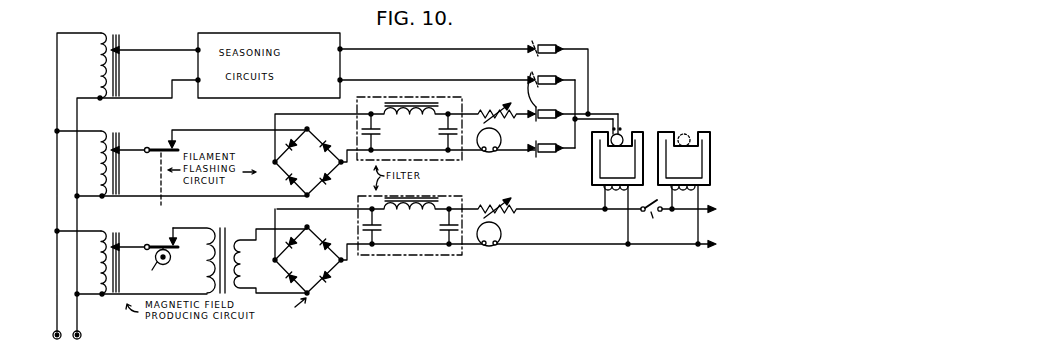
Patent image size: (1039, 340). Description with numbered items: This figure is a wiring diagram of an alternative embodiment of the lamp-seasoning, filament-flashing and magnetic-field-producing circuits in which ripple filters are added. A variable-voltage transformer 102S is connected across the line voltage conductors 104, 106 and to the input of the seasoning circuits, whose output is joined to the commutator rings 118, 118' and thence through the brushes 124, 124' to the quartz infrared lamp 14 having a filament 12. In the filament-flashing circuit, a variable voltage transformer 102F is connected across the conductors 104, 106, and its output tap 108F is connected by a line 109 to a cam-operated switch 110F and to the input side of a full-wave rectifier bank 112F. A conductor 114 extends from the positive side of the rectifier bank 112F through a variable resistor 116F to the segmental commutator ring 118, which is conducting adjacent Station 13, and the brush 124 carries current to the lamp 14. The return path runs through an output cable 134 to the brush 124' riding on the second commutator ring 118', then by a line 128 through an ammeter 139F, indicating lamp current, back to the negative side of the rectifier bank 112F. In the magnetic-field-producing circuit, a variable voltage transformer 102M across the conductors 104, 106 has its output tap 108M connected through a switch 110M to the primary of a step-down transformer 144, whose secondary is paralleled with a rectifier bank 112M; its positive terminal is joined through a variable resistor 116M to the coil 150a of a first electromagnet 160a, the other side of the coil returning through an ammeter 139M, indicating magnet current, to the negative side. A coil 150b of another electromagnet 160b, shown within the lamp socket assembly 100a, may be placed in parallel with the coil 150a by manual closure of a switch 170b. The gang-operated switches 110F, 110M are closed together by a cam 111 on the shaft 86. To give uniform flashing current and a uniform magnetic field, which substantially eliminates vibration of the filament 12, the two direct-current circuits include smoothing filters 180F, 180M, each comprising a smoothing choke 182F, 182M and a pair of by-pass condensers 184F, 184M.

The variable-voltage transformer 102S is at (121, 40).
The variable voltage transformer 102F is at (117, 169).
The variable voltage transformer 102M is at (119, 272).
The line voltage conductor 104 is at (57, 324).
The line voltage conductor 106 is at (78, 324).
The output tap 108F is at (126, 146).
The output tap 108M is at (134, 242).
The cam-operated switch 110F is at (162, 147).
The cam-operated switch 110M is at (158, 244).
The line 109 is at (245, 130).
The cam 111 is at (170, 261).
The shaft 86 is at (148, 273).
The full-wave rectifier bank 112F is at (309, 170).
The rectifier bank 112M is at (309, 268).
The conductor 114 is at (335, 117).
The line 128 is at (348, 148).
The step-down transformer 144 is at (223, 227).
The ripple filter 180F is at (386, 98).
The ripple filter 180M is at (436, 260).
The smoothing choke 182F is at (426, 115).
The smoothing choke 182M is at (389, 211).
The filter condensers 184F is at (437, 133).
The filter condensers 184M is at (438, 229).
The variable resistor 116F is at (491, 111).
The variable resistor 116M is at (491, 205).
The ammeter 139F is at (484, 152).
The ammeter 139M is at (485, 250).
The segmental commutator ring 118 is at (521, 83).
The second segmental commutator ring 118' is at (520, 99).
The brush 124 is at (573, 98).
The brush 124' is at (558, 103).
The output cable 134 is at (577, 143).
The lamp socket assembly 100a is at (636, 131).
The first electromagnet 160a is at (641, 130).
The electromagnet 160b is at (672, 129).
The coil 150a is at (616, 173).
The coil 150b is at (684, 200).
The quartz infrared lamp 14 is at (621, 134).
The filament 12 is at (603, 152).
The Station 13 is at (616, 215).
The switch 170b is at (654, 216).